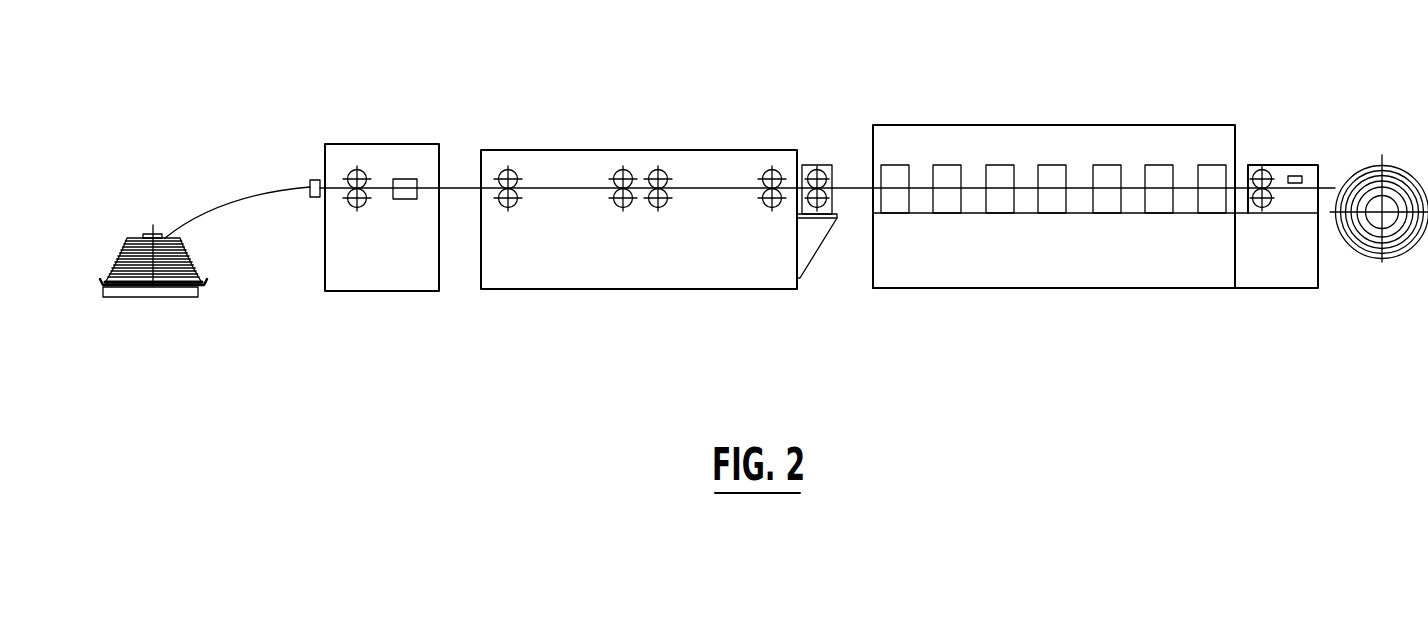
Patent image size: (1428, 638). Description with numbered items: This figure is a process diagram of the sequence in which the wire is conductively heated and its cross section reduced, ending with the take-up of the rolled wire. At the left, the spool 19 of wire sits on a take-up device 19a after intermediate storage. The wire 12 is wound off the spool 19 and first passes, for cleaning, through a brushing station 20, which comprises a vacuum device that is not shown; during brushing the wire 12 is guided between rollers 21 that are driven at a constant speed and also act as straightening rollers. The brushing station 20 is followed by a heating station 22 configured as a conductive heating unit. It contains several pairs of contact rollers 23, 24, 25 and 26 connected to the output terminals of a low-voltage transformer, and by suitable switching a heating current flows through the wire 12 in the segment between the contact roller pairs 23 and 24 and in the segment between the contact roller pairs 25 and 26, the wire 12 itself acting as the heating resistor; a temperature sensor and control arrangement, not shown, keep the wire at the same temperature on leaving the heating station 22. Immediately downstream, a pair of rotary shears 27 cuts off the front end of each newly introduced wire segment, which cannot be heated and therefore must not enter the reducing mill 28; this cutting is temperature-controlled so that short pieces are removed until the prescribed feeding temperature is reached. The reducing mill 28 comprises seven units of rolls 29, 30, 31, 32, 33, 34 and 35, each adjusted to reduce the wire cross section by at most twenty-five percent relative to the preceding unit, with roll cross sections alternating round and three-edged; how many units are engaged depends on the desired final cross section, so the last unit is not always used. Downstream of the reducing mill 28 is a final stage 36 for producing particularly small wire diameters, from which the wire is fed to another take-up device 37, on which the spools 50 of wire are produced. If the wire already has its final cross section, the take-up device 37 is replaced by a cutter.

The wire 12 is at (240, 200).
The spool 19 is at (143, 261).
The take-up device 19a is at (113, 218).
The brushing station 20 is at (382, 199).
The rollers 21 is at (360, 203).
The heating station 22 is at (639, 236).
The contact roller pair 23 is at (508, 168).
The contact roller pair 24 is at (620, 168).
The contact roller pair 25 is at (658, 168).
The contact roller pair 26 is at (772, 168).
The pair of rotary shears 27 is at (824, 140).
The reducing mill 28 is at (1095, 232).
The unit of rolls 29 is at (895, 168).
The unit of rolls 30 is at (948, 200).
The unit of rolls 31 is at (1003, 168).
The unit of rolls 32 is at (1053, 200).
The unit of rolls 33 is at (1108, 168).
The unit of rolls 34 is at (1160, 200).
The unit of rolls 35 is at (1215, 168).
The final stage 36 is at (1272, 312).
The take-up device 37 is at (1379, 185).
The spool of wire 50 is at (1397, 237).